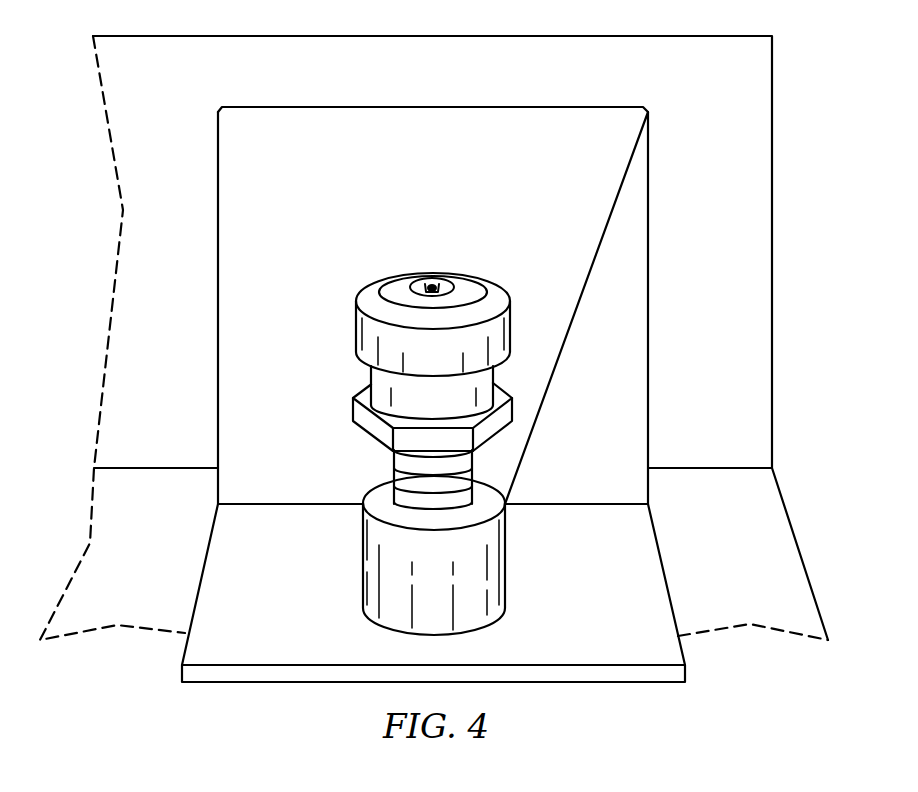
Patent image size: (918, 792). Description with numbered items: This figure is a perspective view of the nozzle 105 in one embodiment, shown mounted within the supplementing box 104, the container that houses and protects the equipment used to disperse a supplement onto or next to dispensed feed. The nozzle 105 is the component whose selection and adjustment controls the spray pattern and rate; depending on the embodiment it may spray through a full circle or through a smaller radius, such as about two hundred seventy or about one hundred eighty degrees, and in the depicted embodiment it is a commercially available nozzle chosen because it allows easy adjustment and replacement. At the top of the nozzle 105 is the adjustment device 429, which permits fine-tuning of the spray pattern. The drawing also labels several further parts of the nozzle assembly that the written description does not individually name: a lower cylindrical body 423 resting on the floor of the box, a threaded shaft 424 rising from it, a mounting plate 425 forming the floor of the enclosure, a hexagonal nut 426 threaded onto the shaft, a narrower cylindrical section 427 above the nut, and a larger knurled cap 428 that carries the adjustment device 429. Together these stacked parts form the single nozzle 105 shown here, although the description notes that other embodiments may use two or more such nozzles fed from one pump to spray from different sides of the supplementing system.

The supplementing box 104 is at (725, 186).
The nozzle 105 is at (560, 295).
The base cylinder 423 is at (375, 557).
The threaded shaft 424 is at (473, 473).
The base plate 425 is at (223, 558).
The hex nut 426 is at (370, 427).
The spacer cylinder 427 is at (492, 381).
The knurled cap 428 is at (357, 335).
The adjustment device 429 is at (430, 284).